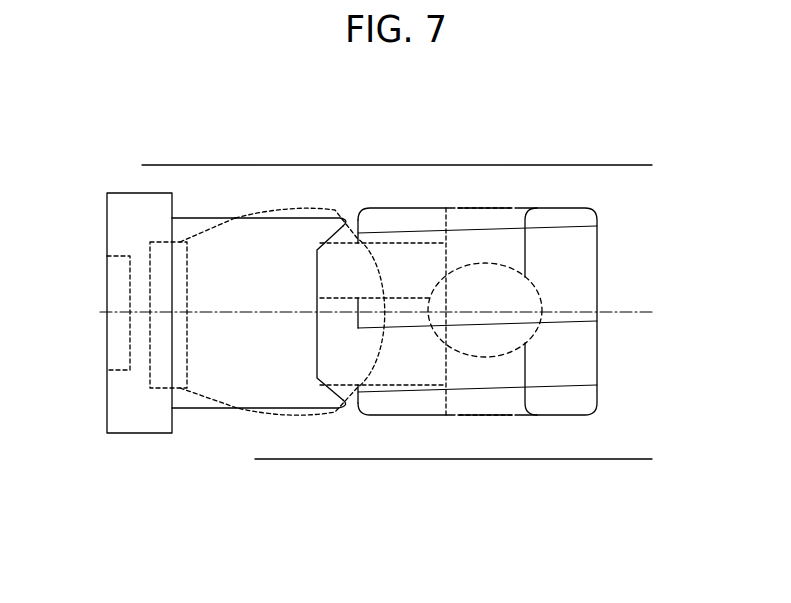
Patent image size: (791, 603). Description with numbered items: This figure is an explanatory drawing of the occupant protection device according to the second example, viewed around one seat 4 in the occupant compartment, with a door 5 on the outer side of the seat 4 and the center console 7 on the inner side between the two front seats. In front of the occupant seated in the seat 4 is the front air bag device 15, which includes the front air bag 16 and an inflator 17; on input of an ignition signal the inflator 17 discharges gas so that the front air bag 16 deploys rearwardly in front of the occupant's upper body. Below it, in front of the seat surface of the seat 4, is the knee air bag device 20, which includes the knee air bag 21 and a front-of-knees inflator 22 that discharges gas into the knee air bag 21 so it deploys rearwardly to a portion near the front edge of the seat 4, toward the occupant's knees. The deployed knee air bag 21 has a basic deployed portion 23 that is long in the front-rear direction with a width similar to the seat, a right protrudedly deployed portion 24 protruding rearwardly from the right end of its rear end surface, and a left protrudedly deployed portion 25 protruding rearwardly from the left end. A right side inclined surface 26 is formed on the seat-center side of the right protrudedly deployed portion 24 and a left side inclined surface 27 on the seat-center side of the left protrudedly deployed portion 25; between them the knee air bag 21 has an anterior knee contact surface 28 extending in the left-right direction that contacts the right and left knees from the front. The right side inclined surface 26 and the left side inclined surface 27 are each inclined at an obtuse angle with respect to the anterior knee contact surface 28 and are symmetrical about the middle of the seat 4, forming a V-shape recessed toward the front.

The seat 4 is at (560, 408).
The door 5 is at (630, 165).
The center console 7 is at (632, 458).
The front air bag device 15 is at (247, 107).
The front air bag 16 is at (237, 247).
The inflator 17 is at (175, 215).
The knee air bag device 20 is at (362, 513).
The knee air bag 21 is at (335, 526).
The front-of-knees inflator 22 is at (122, 372).
The basic deployed portion 23 is at (212, 408).
The right protrudedly deployed portion 24 is at (324, 217).
The left protrudedly deployed portion 25 is at (322, 383).
The right side inclined surface 26 is at (597, 226).
The left side inclined surface 27 is at (597, 385).
The anterior knee contact surface 28 is at (597, 321).